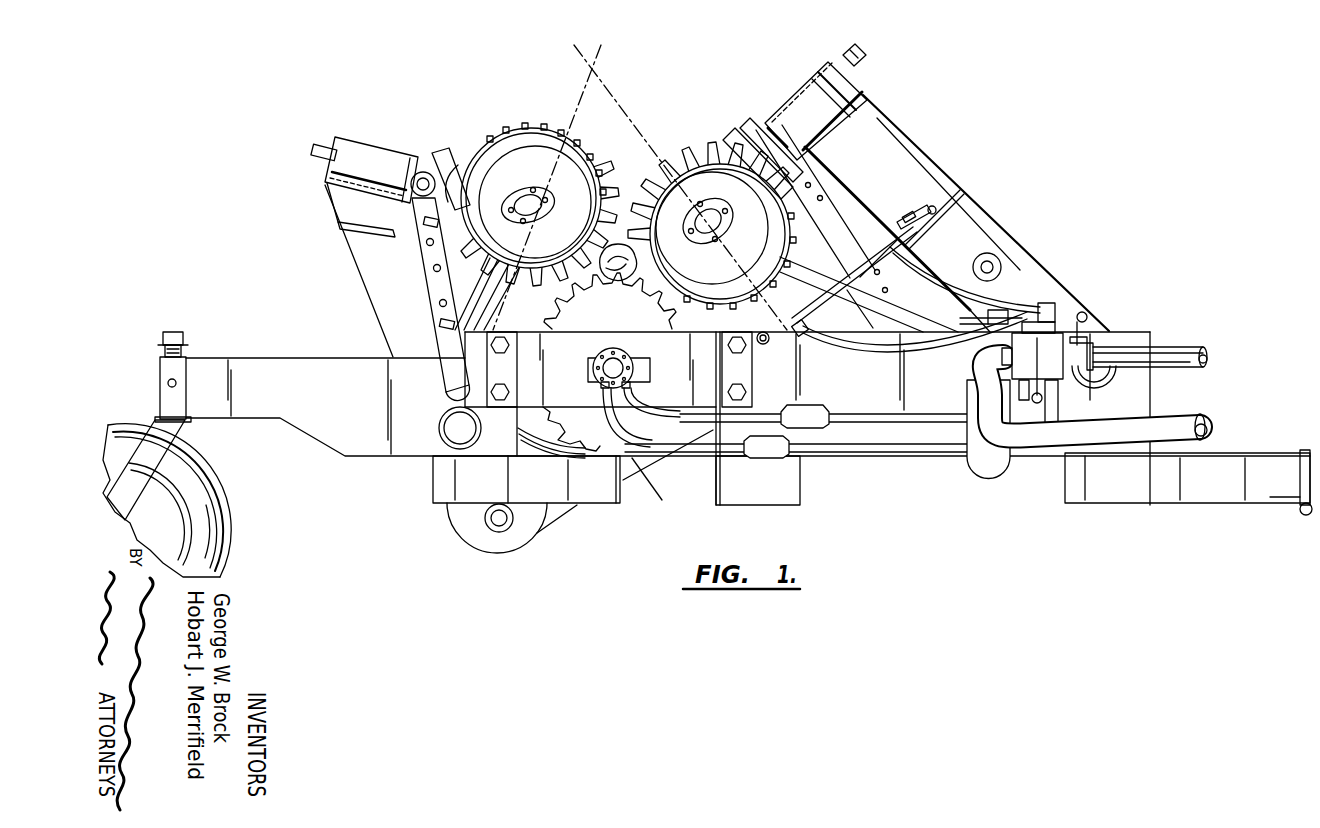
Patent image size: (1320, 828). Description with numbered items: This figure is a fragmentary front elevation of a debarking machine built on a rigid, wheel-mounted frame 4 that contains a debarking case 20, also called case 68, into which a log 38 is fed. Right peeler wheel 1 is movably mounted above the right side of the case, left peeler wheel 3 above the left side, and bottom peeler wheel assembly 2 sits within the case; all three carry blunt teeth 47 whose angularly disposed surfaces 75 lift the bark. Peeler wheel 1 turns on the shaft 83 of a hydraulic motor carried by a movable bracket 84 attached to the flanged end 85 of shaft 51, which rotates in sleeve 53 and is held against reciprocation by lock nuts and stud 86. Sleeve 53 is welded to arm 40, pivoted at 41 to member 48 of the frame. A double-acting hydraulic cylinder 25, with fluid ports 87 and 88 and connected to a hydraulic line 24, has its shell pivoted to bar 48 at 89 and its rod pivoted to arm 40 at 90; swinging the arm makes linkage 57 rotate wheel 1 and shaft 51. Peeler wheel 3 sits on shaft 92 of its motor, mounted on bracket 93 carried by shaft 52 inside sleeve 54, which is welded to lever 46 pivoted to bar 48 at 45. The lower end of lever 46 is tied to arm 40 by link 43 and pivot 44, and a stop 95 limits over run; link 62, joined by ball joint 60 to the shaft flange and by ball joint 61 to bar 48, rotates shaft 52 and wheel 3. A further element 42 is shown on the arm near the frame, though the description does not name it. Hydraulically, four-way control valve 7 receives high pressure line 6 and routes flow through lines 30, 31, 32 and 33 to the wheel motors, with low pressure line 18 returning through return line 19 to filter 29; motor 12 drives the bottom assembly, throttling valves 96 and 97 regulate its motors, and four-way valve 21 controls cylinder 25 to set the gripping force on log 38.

The right peeler wheel 1 is at (712, 225).
The bottom peeler wheel assembly 2 is at (606, 318).
The left peeler wheel 3 is at (540, 204).
The frame 4 is at (452, 487).
The high pressure line 6 is at (1205, 363).
The four-way hydraulic control valve 7 is at (1028, 356).
The hydraulic motor 12 is at (610, 372).
The low pressure line 18 is at (825, 450).
The return line 19 is at (998, 353).
The debarking case 20 is at (1180, 424).
The four-way valve 21 is at (1053, 303).
The hydraulic line 24 is at (893, 348).
The double-acting hydraulic cylinder 25 is at (790, 310).
The filter 29 is at (987, 458).
The line 30 is at (837, 267).
The line 31 is at (812, 300).
The line 32 is at (488, 298).
The line 33 is at (448, 306).
The log 38 is at (617, 248).
The arm 40 is at (953, 193).
The pivot 41 is at (1103, 380).
The hitch eye 42 is at (1000, 260).
The link 43 is at (545, 515).
The pivot 44 is at (492, 520).
The pivot 45 is at (457, 435).
The lever 46 is at (366, 291).
The teeth 47 is at (530, 286).
The member of frame 48 is at (358, 440).
The shaft 51 is at (770, 133).
The shaft 52 is at (432, 163).
The sleeve 53 is at (816, 88).
The sleeve 54 is at (363, 150).
The linkage 57 is at (842, 227).
The ball joint 60 is at (415, 195).
The ball joint 61 is at (458, 390).
The link 62 is at (430, 299).
The case 68 is at (537, 340).
The angularly disposed surfaces 75 is at (590, 298).
The shaft 83 is at (708, 229).
The bracket 84 is at (730, 137).
The flanged end 85 is at (743, 125).
The lock nuts and stud 86 is at (845, 70).
The fluid port 87 is at (887, 247).
The fluid port 88 is at (801, 332).
The pivot 89 is at (764, 346).
The pivot 90 is at (912, 220).
The shaft 92 is at (538, 207).
The bracket 93 is at (455, 170).
The stop 95 is at (363, 229).
The throttling valve 96 is at (803, 413).
The throttling valve 97 is at (770, 452).